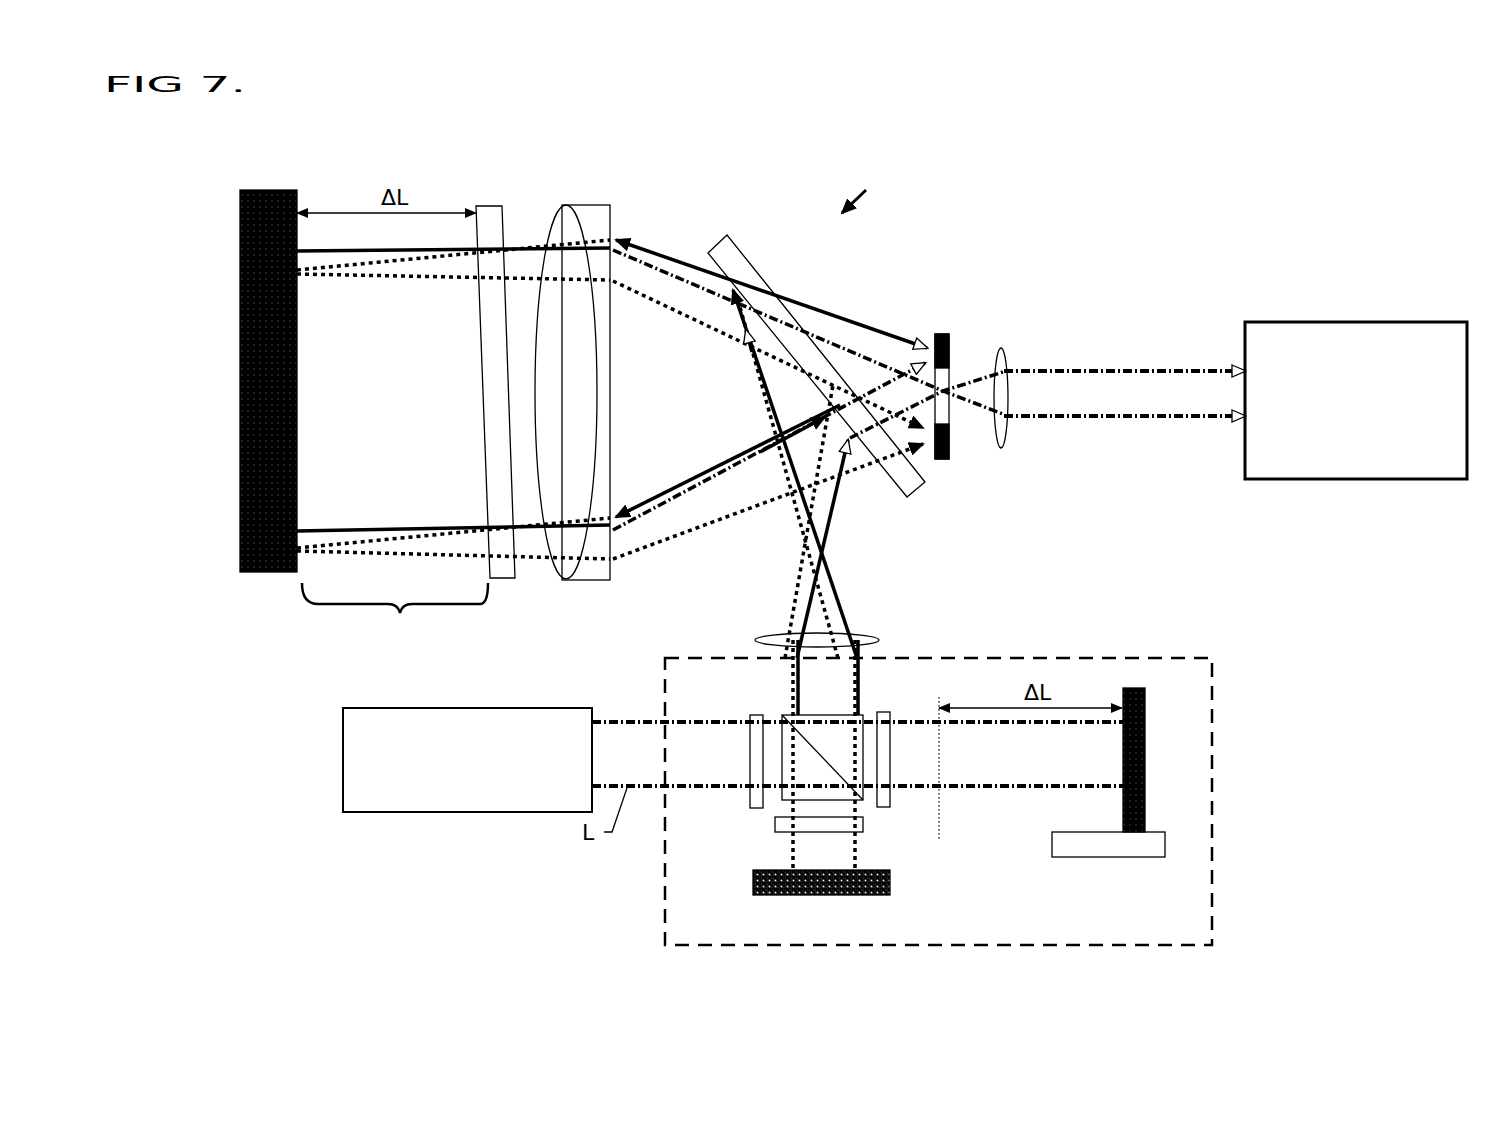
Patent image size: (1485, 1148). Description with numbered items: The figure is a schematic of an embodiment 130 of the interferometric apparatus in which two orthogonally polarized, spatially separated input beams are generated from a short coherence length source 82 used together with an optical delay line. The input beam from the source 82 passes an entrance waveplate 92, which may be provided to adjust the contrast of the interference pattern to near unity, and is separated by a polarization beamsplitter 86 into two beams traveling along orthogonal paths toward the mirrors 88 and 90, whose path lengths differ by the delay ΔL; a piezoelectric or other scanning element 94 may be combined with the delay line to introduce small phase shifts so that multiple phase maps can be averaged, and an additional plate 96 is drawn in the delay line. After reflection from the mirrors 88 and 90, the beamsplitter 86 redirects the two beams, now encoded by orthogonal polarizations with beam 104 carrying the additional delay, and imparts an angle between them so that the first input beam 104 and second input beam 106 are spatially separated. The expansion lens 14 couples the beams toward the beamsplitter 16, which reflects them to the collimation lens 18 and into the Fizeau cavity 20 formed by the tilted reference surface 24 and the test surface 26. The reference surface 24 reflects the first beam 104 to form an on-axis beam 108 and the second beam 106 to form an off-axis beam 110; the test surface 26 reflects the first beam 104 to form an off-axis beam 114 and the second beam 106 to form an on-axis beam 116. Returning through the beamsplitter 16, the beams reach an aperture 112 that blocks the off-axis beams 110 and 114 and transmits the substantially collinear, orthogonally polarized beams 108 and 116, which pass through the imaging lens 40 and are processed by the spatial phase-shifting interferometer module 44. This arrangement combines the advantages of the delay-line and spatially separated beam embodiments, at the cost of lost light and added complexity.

The test surface 26 is at (297, 190).
The reference surface 24 is at (488, 206).
The collimation lens 18 is at (610, 205).
The Fizeau cavity 20 is at (395, 623).
The beamsplitter 16 is at (733, 232).
The embodiment 130 is at (876, 196).
The off-axis beam 110 is at (833, 310).
The off-axis beam 114 is at (867, 467).
The second input beam 106 is at (830, 533).
The first input beam 104 is at (803, 530).
The aperture 112 is at (948, 332).
The imaging lens 40 is at (999, 346).
The on-axis beam 108 is at (1128, 369).
The on-axis beam 116 is at (1123, 418).
The spatial phase-shifting interferometer module 44 is at (1283, 479).
The expansion lens 14 is at (878, 639).
The short coherence length source 82 is at (392, 812).
The entrance waveplate 92 is at (750, 808).
The polarization beamsplitter 86 is at (783, 717).
The scanning element 94 is at (863, 832).
The plate 96 is at (892, 712).
The mirror 90 is at (1150, 708).
The mirror 88 is at (887, 878).